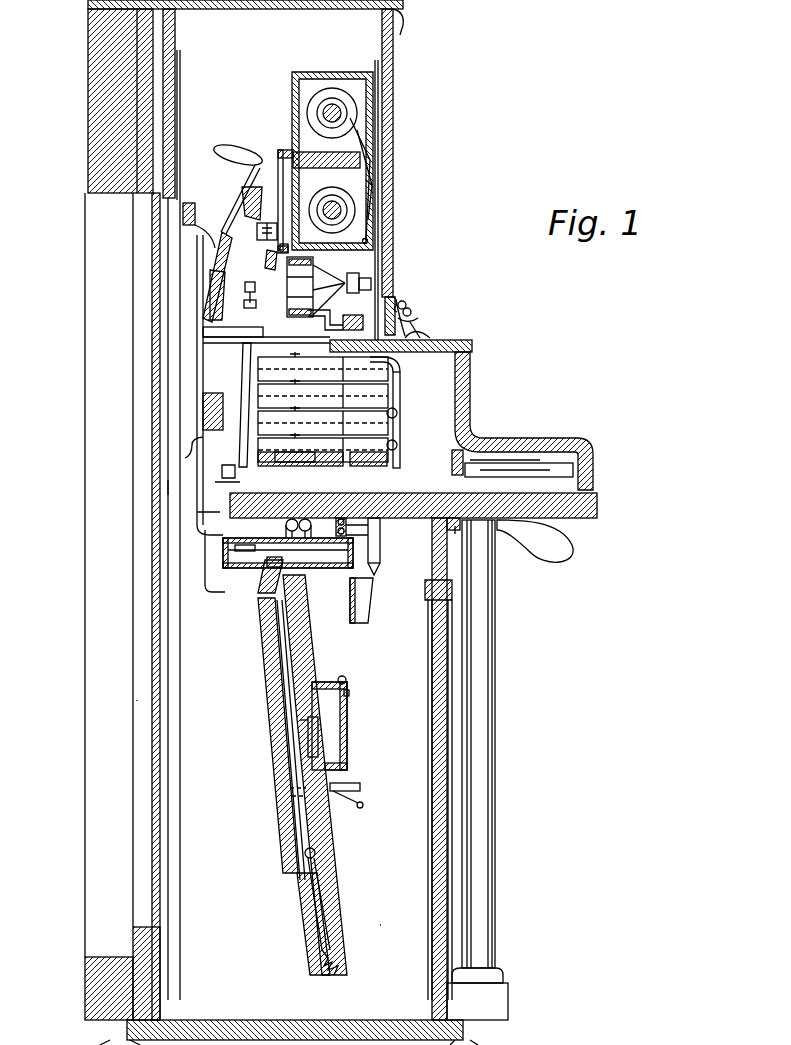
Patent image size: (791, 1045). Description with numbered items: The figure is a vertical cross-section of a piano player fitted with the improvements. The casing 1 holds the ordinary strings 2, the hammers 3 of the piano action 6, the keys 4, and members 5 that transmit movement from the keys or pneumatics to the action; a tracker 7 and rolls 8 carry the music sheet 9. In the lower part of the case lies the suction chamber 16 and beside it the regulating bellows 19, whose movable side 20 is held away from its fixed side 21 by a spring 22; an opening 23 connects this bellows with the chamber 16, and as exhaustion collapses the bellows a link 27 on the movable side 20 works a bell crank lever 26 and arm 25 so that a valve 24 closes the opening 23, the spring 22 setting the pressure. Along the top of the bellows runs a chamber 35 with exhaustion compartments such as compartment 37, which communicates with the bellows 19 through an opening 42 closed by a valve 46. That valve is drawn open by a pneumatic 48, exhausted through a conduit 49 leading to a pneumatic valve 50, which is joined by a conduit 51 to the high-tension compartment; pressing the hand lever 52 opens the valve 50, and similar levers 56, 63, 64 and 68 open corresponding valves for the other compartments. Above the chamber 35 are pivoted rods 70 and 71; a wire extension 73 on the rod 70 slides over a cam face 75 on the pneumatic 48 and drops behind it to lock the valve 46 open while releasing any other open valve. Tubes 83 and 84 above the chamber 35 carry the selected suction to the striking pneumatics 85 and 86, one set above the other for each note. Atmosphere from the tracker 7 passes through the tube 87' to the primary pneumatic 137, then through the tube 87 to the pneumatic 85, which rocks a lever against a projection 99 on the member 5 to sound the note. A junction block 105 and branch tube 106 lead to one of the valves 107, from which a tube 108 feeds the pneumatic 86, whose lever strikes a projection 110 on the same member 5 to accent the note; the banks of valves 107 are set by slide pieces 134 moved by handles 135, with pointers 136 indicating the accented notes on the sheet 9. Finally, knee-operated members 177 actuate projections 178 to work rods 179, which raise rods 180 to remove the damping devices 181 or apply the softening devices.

The casing 1 is at (88, 24).
The strings 2 is at (180, 700).
The hammers 3 is at (238, 160).
The keys 4 is at (535, 470).
The members 5 is at (247, 380).
The piano action 6 is at (230, 252).
The tracker 7 is at (310, 152).
The rolls 8 is at (338, 112).
The music sheet 9 is at (364, 140).
The suction chamber 16 is at (350, 752).
The regulating bellows 19 is at (306, 650).
The movable side 20 is at (264, 642).
The fixed side 21 is at (340, 890).
The spring 22 is at (385, 915).
The opening 23 is at (319, 737).
The valve 24 is at (306, 735).
The arm 25 is at (350, 700).
The bell crank lever 26 is at (356, 806).
The link 27 is at (300, 792).
The chamber 35 is at (300, 458).
The compartment 37 is at (223, 550).
The opening 42 is at (268, 592).
The valve 46 is at (232, 548).
The pneumatic 48 is at (368, 602).
The conduit 49 is at (228, 588).
The pneumatic valve 50 is at (398, 300).
The conduit 51 is at (220, 528).
The lever 52 is at (425, 335).
The lever 56 is at (416, 322).
The lever 63 is at (403, 302).
The lever 64 is at (408, 310).
The lever 68 is at (408, 316).
The rod 70 is at (300, 532).
The rod 71 is at (340, 538).
The wire extension 73 is at (352, 528).
The cam face 75 is at (374, 545).
The tube 83 is at (398, 446).
The tube 84 is at (398, 413).
The striking pneumatic 85 is at (386, 386).
The striking pneumatic 86 is at (372, 366).
The tube 87 is at (174, 382).
The tube 87' is at (269, 188).
The projection 99 is at (222, 470).
The junction block 105 is at (286, 246).
The branch tube 106 is at (289, 250).
The valves 107 is at (351, 282).
The tube 108 is at (343, 323).
The projection 110 is at (165, 487).
The slide piece 134 is at (393, 262).
The handle 135 is at (470, 278).
The pointers 136 is at (372, 192).
The primary pneumatic 137 is at (257, 230).
The members 177 is at (540, 548).
The projections 178 is at (460, 530).
The rods 179 is at (195, 512).
The rods 180 is at (185, 458).
The damping devices 181 is at (190, 203).